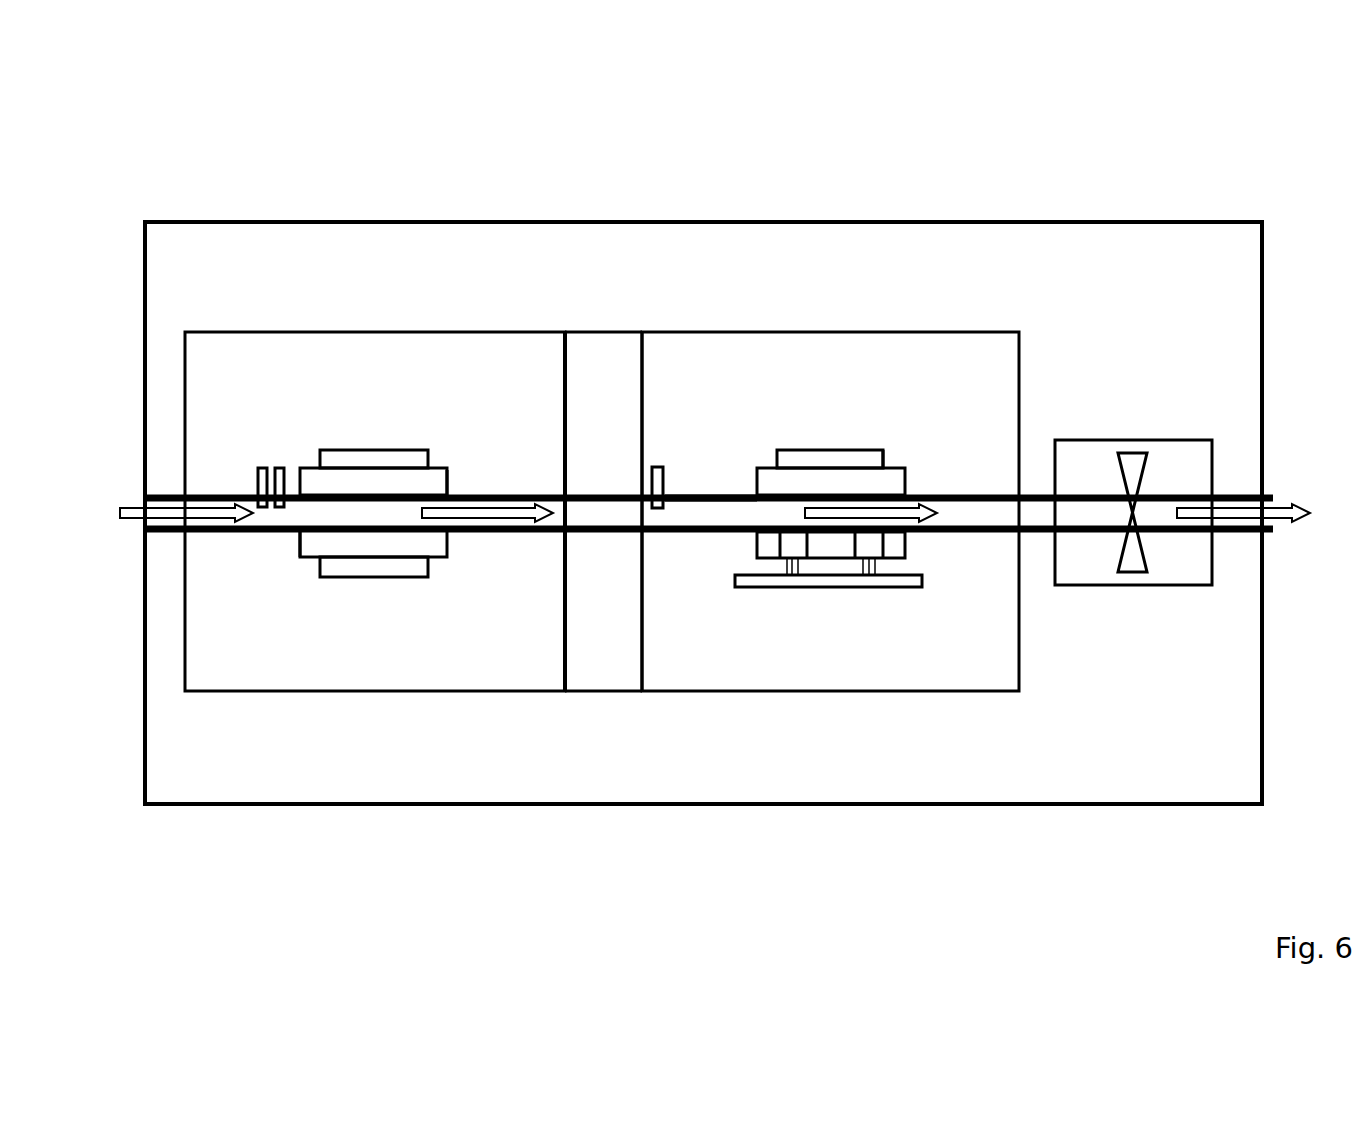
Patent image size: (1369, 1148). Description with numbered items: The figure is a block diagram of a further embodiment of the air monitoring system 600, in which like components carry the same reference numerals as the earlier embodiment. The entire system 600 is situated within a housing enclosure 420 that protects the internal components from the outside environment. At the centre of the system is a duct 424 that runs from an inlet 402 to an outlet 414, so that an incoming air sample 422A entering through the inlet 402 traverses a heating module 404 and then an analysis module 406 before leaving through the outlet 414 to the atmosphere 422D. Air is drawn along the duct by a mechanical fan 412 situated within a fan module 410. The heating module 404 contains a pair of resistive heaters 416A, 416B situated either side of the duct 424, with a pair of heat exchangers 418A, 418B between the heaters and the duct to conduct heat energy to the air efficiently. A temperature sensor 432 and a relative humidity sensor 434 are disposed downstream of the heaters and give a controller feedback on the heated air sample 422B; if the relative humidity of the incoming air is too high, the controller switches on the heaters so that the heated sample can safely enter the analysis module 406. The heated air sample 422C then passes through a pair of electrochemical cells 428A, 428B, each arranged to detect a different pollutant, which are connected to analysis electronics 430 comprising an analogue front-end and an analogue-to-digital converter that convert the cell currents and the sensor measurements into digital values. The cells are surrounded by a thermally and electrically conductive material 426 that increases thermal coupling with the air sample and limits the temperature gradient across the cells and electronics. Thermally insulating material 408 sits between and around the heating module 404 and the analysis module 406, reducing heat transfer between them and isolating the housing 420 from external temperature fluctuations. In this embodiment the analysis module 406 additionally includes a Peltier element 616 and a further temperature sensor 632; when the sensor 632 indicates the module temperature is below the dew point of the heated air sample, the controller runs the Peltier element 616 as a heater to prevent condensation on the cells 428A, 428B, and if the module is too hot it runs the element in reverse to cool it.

The system 600 is at (230, 108).
The housing enclosure 420 is at (705, 220).
The heating module 404 is at (375, 332).
The thermally insulating material 408 is at (487, 372).
The analysis module 406 is at (832, 332).
The inlet 402 is at (145, 492).
The outlet 414 is at (1265, 493).
The incoming air sample 422A is at (120, 517).
The heated air sample 422B is at (487, 522).
The air sample entering analysis module 422C is at (932, 530).
The exhausted air sample 422D is at (1300, 523).
The temperature sensor 432 is at (262, 468).
The relative humidity sensor 434 is at (280, 468).
The resistive heater 416A is at (375, 450).
The heat exchanger 418A is at (448, 480).
The resistive heater 416B is at (375, 578).
The heat exchanger 418B is at (300, 557).
The temperature sensor 632 is at (650, 485).
The duct 424 is at (680, 512).
The thermally and electrically conductive material 426 is at (770, 543).
The Peltier element 616 is at (885, 458).
The electrochemical cell 428A is at (793, 545).
The electrochemical cell 428B is at (865, 540).
The analysis electronics 430 is at (777, 588).
The fan module 410 is at (1133, 440).
The fan 412 is at (1133, 572).